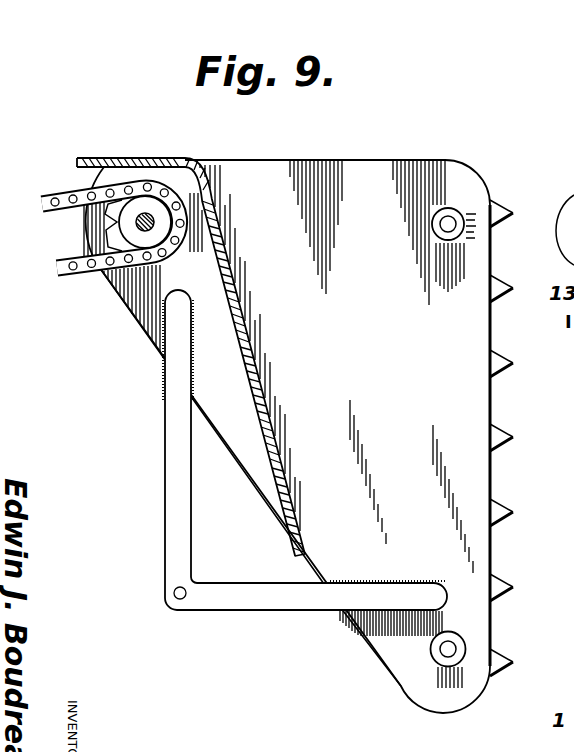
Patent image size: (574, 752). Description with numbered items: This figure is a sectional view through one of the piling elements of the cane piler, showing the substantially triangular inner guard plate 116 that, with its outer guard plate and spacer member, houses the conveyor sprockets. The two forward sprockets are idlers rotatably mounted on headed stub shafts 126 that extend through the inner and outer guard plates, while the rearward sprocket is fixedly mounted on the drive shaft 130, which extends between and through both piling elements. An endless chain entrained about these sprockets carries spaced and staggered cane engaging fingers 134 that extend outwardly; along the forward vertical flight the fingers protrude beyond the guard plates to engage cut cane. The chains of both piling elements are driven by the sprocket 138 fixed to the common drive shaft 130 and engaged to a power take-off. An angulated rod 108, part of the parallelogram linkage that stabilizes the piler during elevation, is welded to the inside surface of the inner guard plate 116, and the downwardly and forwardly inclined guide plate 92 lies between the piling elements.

The guide plate 92 is at (258, 378).
The angulated rods 108 is at (241, 609).
The inner guard plate 116 is at (435, 377).
The headed stub shafts 126 is at (440, 652).
The drive shaft 130 is at (155, 221).
The cane engaging fingers 134 is at (500, 505).
The sprocket 138 is at (107, 230).